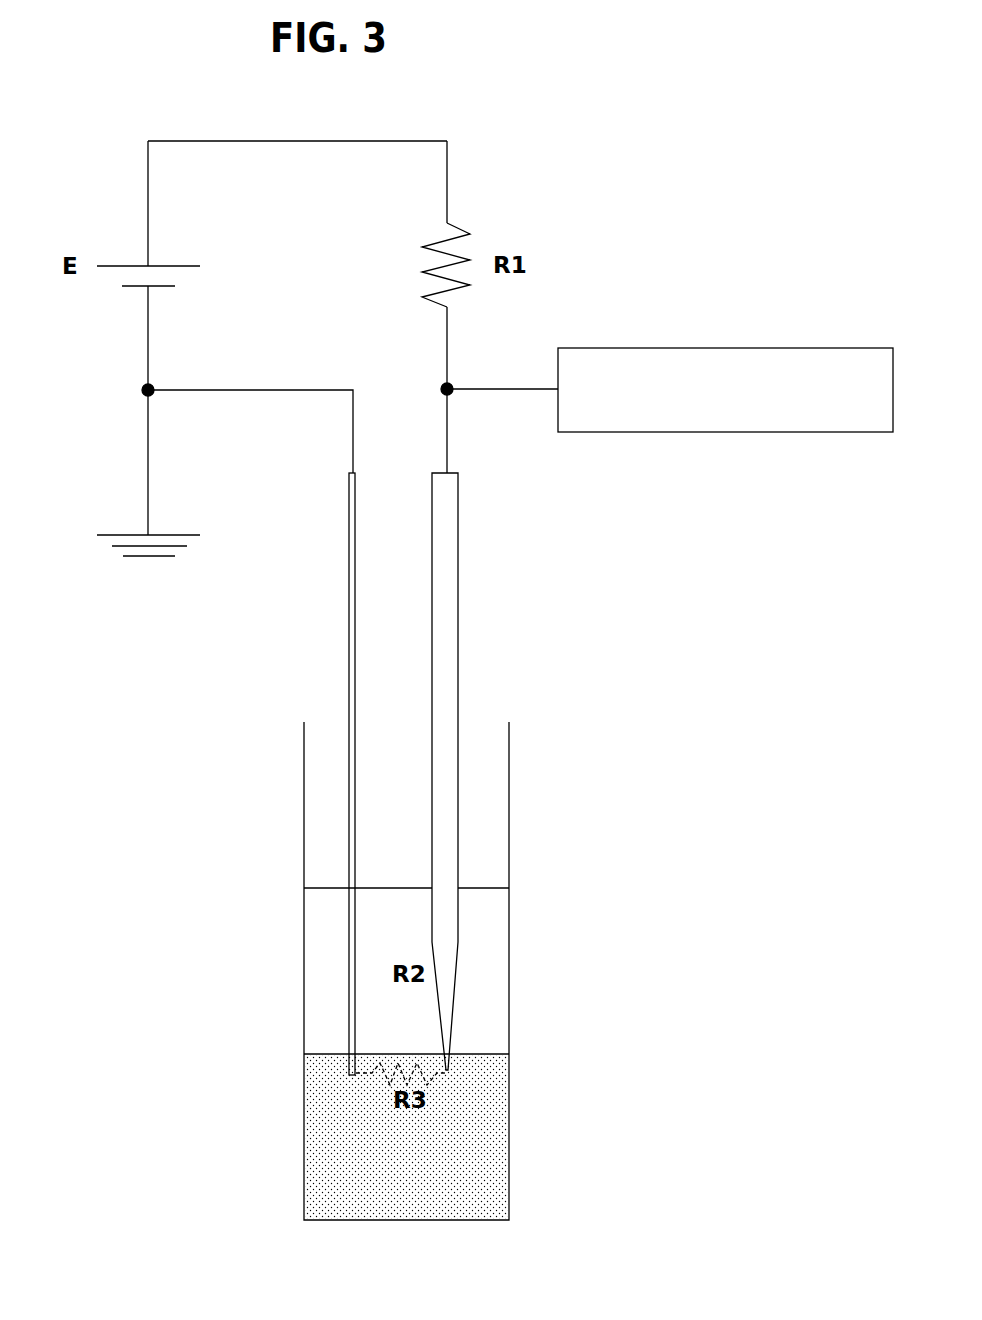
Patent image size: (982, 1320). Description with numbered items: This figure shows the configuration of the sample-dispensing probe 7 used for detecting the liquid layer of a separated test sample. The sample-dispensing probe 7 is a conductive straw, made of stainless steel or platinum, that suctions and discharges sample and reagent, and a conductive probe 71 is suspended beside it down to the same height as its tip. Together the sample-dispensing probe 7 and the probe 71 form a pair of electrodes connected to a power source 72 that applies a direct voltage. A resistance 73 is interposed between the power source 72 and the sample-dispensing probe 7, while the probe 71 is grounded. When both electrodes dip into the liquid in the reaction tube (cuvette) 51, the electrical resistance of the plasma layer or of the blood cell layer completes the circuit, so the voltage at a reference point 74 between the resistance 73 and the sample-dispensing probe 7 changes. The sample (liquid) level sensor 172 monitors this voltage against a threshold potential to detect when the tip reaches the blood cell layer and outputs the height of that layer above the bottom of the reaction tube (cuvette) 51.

The power source 72 is at (130, 266).
The resistance 73 is at (456, 228).
The reference point 74 is at (451, 388).
The sample (liquid) level sensor 172 is at (737, 348).
The probe 71 is at (349, 638).
The sample-dispensing probe 7 is at (458, 637).
The reaction tube (cuvette) 51 is at (509, 820).